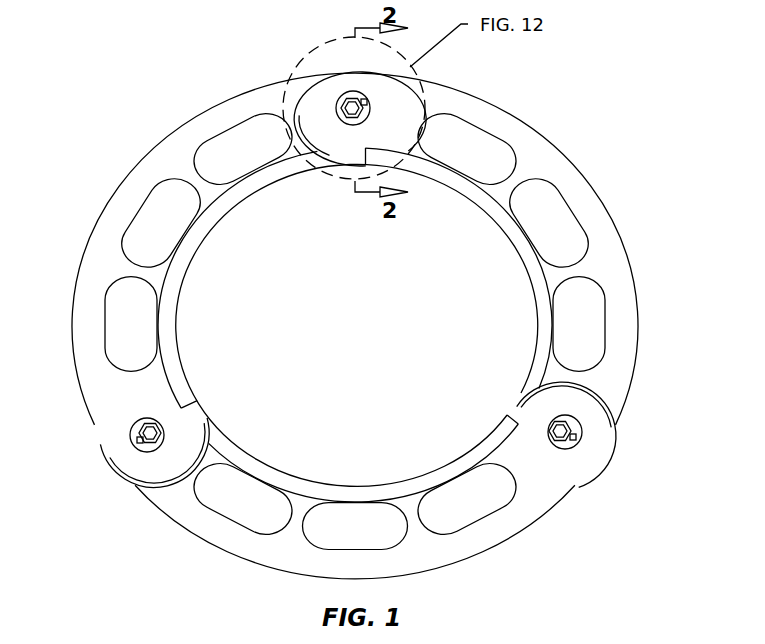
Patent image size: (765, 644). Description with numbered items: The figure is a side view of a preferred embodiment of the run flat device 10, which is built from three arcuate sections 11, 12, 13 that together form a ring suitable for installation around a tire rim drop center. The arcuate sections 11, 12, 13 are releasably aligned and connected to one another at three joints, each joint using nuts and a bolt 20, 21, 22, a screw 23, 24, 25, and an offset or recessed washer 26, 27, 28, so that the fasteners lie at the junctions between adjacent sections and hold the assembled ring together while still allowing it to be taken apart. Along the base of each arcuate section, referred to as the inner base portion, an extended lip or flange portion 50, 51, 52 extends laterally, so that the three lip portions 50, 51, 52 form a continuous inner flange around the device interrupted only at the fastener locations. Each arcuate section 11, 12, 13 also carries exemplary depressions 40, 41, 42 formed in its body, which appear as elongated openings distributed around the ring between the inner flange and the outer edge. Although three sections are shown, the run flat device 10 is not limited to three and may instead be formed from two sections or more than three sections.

The run flat device 10 is at (107, 79).
The arcuate section 11 is at (140, 190).
The arcuate section 12 is at (508, 520).
The arcuate section 13 is at (528, 152).
The bolt 20 is at (163, 430).
The bolt 21 is at (558, 428).
The bolt 22 is at (314, 117).
The screw 23 is at (140, 443).
The screw 24 is at (576, 437).
The screw 25 is at (361, 101).
The offset or recessed washer 26 is at (130, 431).
The offset or recessed washer 27 is at (568, 448).
The offset or recessed washer 28 is at (416, 96).
The depression 40 is at (172, 237).
The depression 41 is at (363, 541).
The depression 42 is at (562, 237).
The extended lip or flange portion 50 is at (183, 258).
The extended lip or flange portion 51 is at (300, 488).
The extended lip or flange portion 52 is at (520, 242).